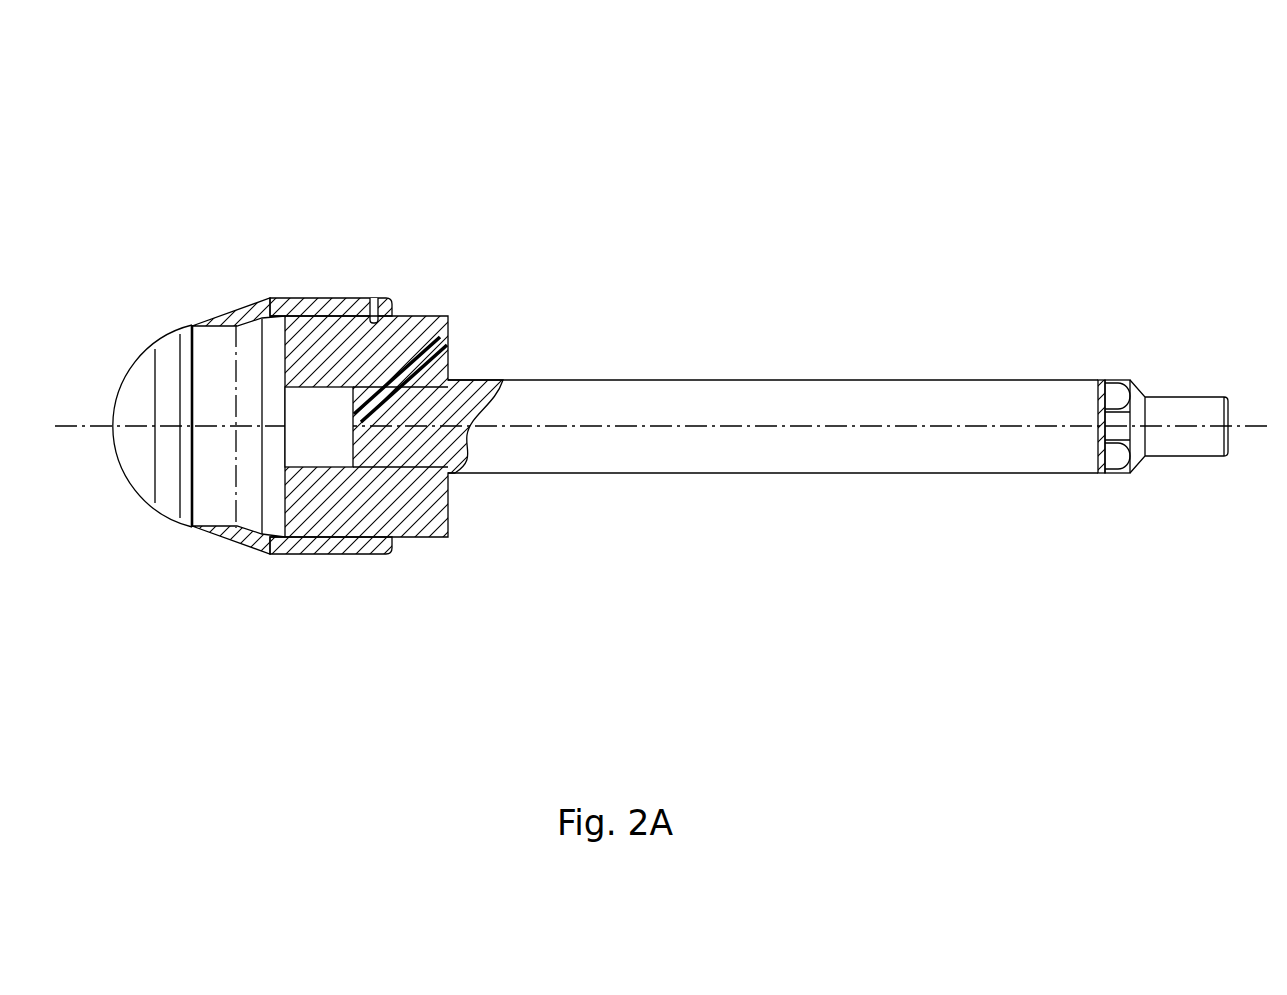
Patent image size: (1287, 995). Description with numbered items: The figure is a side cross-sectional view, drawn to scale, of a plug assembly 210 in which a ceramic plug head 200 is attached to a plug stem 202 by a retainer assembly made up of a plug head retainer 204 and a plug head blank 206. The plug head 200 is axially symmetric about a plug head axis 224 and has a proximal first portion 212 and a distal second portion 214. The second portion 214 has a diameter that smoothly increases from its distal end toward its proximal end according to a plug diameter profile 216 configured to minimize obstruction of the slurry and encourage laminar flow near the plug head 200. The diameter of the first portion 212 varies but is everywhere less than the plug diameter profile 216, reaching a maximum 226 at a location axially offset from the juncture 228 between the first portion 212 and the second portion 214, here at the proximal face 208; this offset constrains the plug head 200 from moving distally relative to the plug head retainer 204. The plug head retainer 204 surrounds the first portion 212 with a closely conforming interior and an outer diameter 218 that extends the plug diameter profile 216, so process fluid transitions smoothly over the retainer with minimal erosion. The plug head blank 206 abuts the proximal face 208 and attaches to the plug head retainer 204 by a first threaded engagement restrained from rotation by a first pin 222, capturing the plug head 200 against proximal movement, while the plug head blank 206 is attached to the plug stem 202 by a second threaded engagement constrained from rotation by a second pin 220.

The plug head 200 is at (157, 327).
The plug stem 202 is at (728, 456).
The plug head retainer 204 is at (302, 297).
The plug head blank 206 is at (440, 315).
The proximal face 208 is at (289, 444).
The plug assembly 210 is at (438, 124).
The first portion 212 is at (262, 434).
The second portion 214 is at (138, 434).
The plug diameter profile 216 is at (125, 378).
The outer diameter 218 is at (237, 310).
The second pin 220 is at (446, 345).
The first pin 222 is at (375, 297).
The plug head axis 224 is at (1258, 422).
The maximum 226 is at (274, 555).
The juncture 228 is at (192, 528).